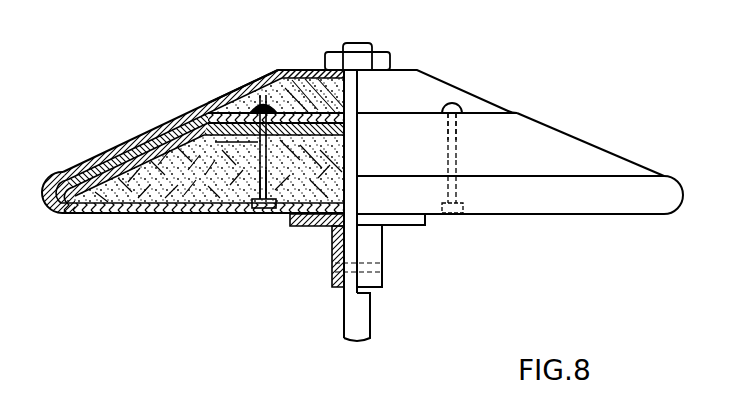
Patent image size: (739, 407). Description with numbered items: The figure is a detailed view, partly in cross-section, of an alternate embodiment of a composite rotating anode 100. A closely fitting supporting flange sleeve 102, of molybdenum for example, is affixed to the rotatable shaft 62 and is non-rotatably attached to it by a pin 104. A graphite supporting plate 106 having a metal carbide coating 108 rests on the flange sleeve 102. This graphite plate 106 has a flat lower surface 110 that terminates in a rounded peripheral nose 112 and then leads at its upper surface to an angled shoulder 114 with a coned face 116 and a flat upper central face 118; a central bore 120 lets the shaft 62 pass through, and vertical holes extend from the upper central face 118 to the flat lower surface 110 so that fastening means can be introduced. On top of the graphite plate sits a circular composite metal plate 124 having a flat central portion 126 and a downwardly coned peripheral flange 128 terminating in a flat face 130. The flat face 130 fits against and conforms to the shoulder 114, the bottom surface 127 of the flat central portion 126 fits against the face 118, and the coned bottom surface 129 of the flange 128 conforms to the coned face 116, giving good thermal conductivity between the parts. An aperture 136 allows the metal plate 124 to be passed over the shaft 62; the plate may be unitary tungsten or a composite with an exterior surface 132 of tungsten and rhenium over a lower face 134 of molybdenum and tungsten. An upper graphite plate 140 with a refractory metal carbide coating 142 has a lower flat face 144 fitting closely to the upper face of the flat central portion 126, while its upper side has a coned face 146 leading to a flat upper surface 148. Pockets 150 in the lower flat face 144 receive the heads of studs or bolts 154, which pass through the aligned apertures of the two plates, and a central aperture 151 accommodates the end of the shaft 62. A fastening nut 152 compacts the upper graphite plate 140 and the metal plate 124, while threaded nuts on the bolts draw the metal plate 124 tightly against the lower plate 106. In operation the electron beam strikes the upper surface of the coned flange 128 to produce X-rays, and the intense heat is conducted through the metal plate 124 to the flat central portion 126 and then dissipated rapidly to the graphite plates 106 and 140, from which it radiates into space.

The rotatable shaft 62 is at (366, 312).
The composite rotating anode 100 is at (543, 203).
The supporting flange sleeve 102 is at (374, 247).
The pin 104 is at (336, 270).
The graphite supporting plate 106 is at (140, 215).
The metal carbide coating 108 is at (175, 213).
The flat lower surface 110 is at (627, 207).
The rounded peripheral nose 112 is at (684, 195).
The angled shoulder 114 is at (62, 173).
The coned face 116 is at (202, 169).
The flat upper central face 118 is at (260, 160).
The central bore 120 is at (308, 169).
The circular composite metal plate 124 is at (112, 141).
The flat central portion 126 is at (207, 112).
The bottom surface of flat central portion 127 is at (174, 173).
The downwardly coned peripheral flange 128 is at (143, 133).
The coned bottom surface 129 is at (173, 120).
The flat face 130 is at (78, 170).
The exterior surface 132 is at (88, 163).
The layer boundary 134 is at (160, 127).
The aperture 136 is at (510, 152).
The upper graphite plate 140 is at (308, 73).
The refractory metal carbide coating 142 is at (300, 67).
The lower flat face 144 is at (428, 113).
The coned face 146 is at (237, 88).
The flat upper surface 148 is at (420, 60).
The pockets 150 is at (277, 92).
The central aperture 151 is at (352, 86).
The fastening nut 152 is at (378, 52).
The studs or bolts 154 is at (453, 158).